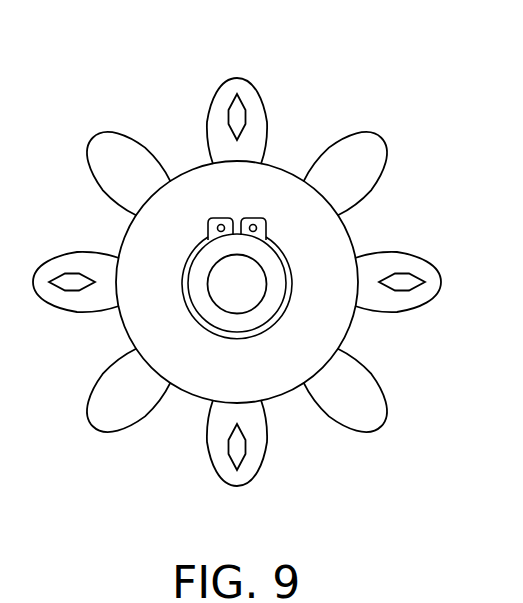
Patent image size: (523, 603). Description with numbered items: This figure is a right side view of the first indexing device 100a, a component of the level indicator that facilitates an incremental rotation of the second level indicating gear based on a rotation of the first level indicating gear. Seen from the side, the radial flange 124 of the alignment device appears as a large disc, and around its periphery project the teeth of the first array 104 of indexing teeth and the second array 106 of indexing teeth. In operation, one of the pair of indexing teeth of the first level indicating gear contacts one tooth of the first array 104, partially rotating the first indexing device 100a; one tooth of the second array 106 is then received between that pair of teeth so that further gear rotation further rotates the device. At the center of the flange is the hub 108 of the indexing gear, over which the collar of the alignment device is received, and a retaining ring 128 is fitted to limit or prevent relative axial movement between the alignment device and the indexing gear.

The first indexing device 100a is at (292, 102).
The first array of indexing teeth 104 is at (93, 133).
The second array of indexing teeth 106 is at (237, 80).
The hub 108 is at (277, 270).
The radial flange 124 is at (277, 383).
The retaining ring 128 is at (201, 246).